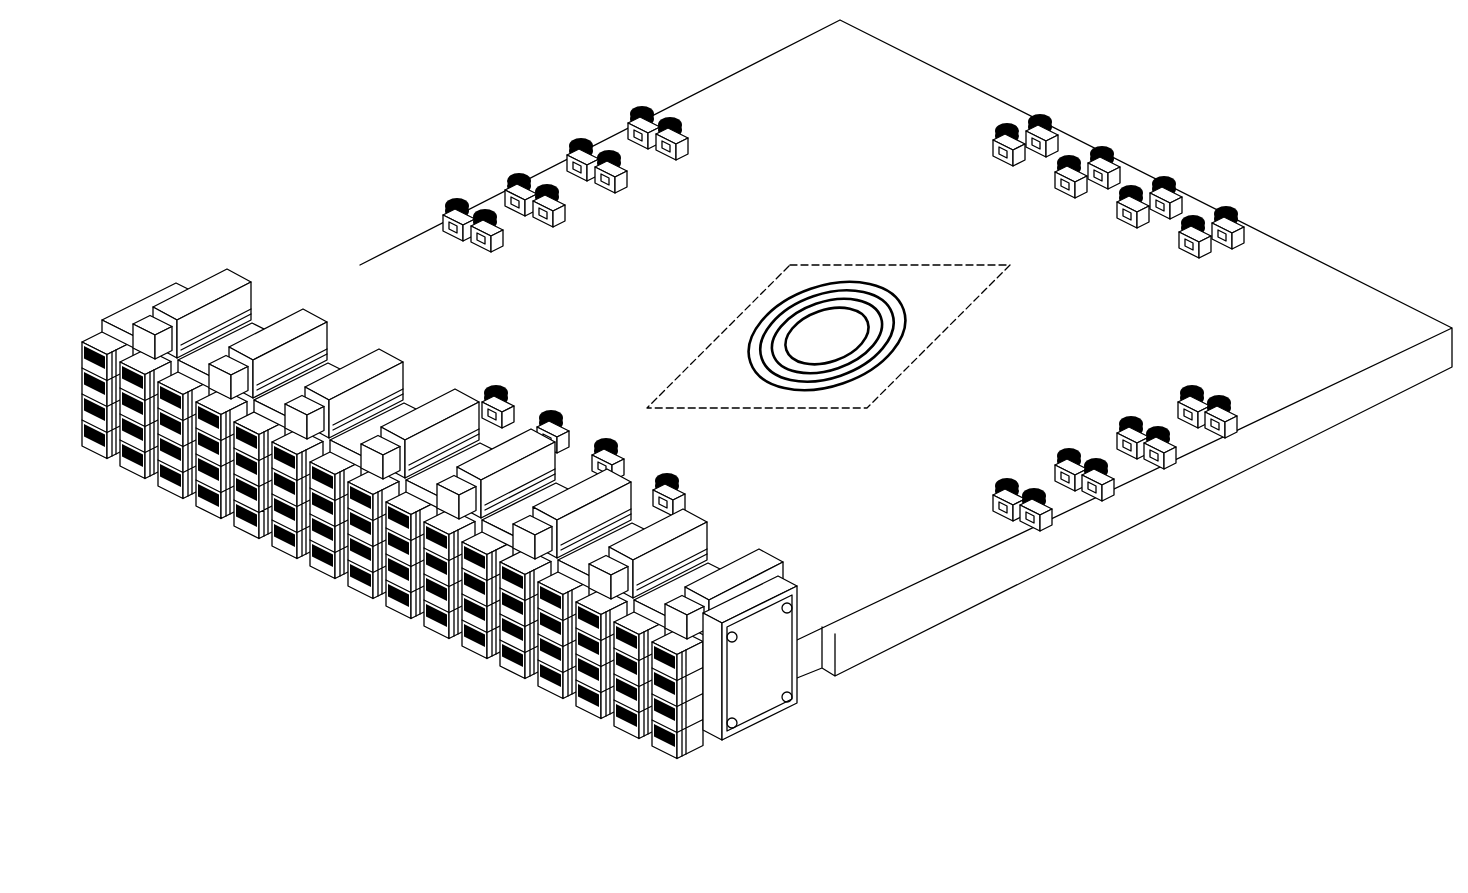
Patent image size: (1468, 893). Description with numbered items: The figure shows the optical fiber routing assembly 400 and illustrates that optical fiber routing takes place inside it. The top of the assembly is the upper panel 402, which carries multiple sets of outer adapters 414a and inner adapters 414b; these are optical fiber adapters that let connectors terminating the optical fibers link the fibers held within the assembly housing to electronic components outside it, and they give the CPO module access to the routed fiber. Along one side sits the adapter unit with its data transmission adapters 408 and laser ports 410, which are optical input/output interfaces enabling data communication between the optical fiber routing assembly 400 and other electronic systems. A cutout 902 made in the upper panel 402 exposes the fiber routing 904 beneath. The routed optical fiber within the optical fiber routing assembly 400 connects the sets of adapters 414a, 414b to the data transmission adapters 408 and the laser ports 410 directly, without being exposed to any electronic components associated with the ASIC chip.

The optical fiber routing assembly 400 is at (1166, 90).
The upper panel 402 is at (1336, 326).
The data transmission adapters 408 is at (423, 610).
The laser ports 410 is at (156, 330).
The outer adapters 414a is at (458, 203).
The inner adapters 414b is at (545, 185).
The cutout 902 is at (928, 265).
The fiber routing 904 is at (825, 336).